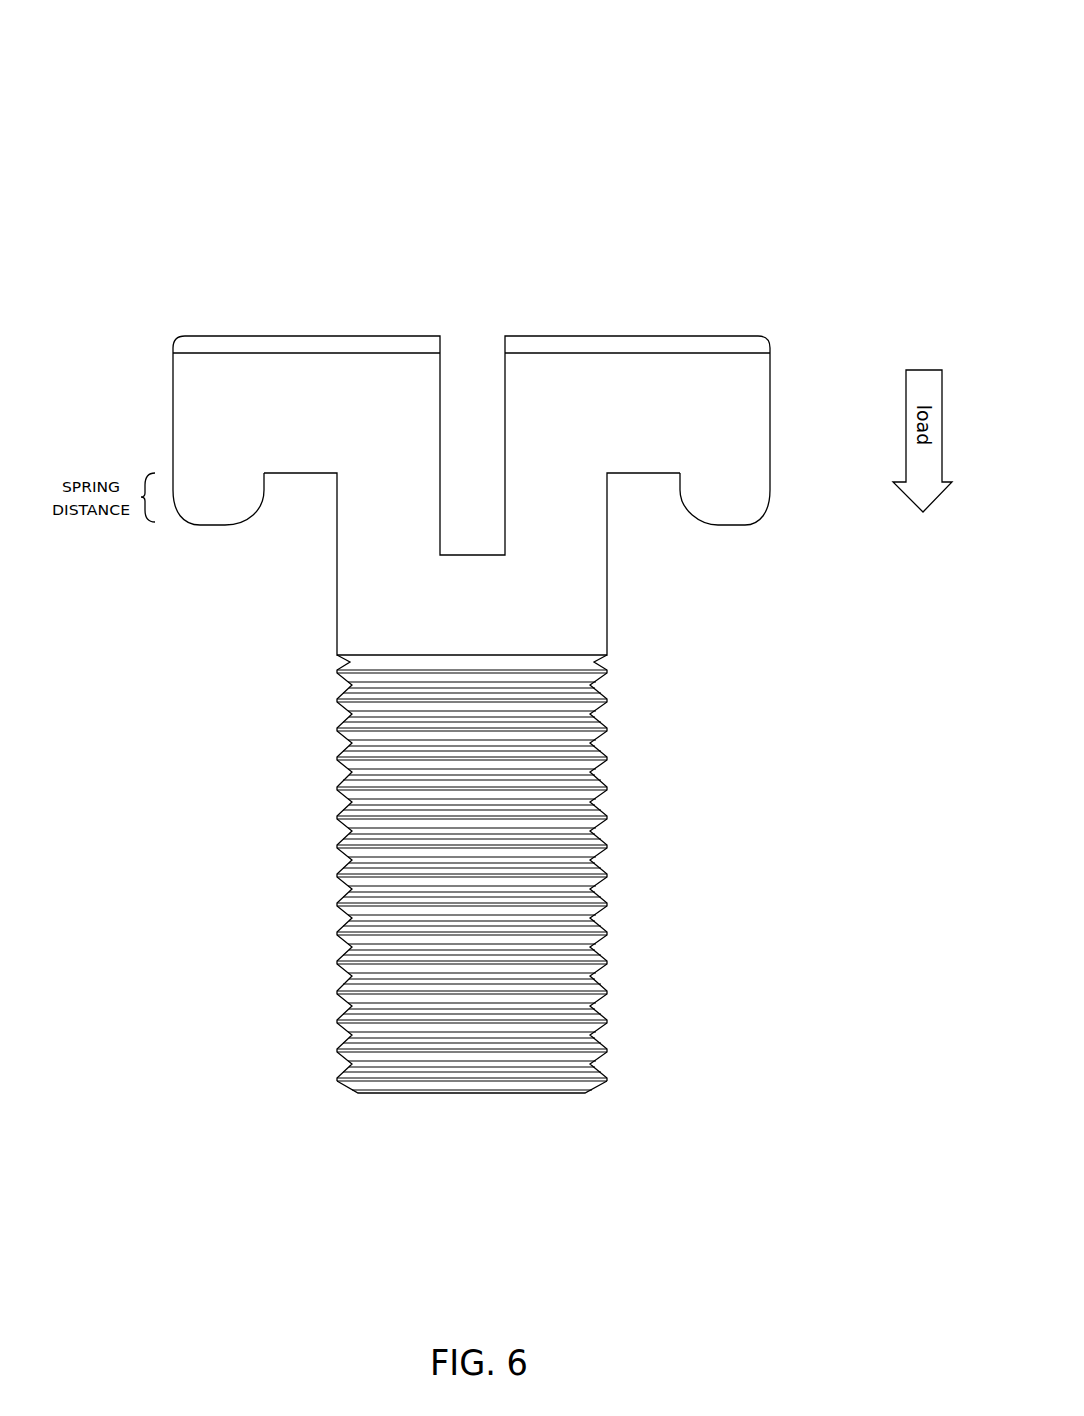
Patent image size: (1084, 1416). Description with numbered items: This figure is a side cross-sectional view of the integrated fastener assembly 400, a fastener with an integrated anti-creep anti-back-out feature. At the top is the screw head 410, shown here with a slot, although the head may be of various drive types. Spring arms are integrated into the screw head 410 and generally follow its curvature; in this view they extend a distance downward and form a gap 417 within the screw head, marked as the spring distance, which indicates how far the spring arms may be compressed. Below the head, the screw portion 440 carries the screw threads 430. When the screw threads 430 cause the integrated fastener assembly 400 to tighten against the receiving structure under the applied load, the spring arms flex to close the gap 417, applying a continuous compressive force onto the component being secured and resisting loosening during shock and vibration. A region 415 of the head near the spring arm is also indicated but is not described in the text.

The integrated fastener assembly 400 is at (522, 596).
The screw head 410 is at (637, 336).
The right spring recess 415 is at (737, 510).
The gap 417 is at (300, 497).
The screw threads 430 is at (597, 911).
The screw portion 440 is at (523, 1093).